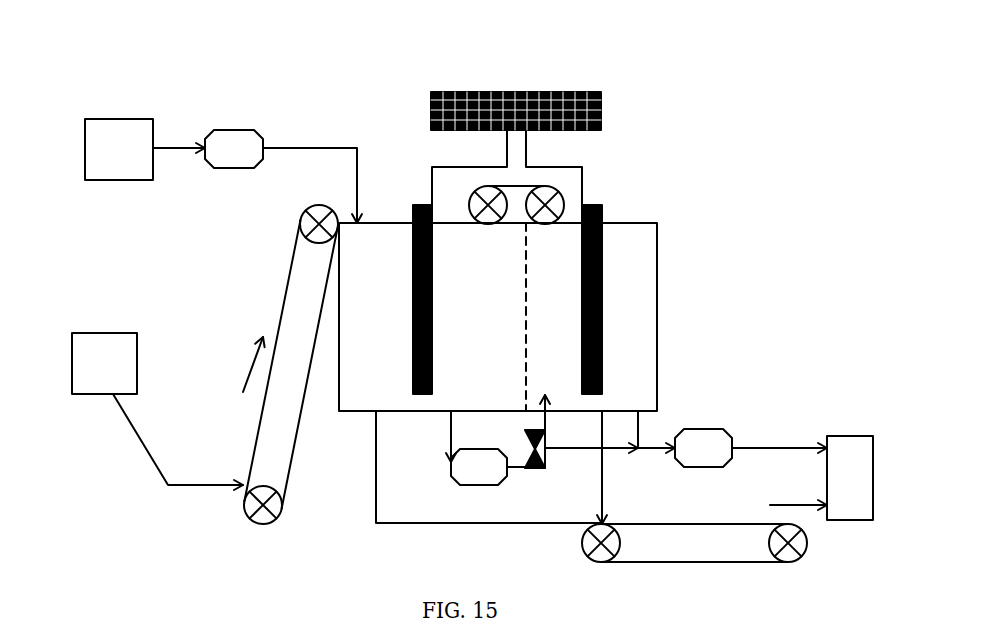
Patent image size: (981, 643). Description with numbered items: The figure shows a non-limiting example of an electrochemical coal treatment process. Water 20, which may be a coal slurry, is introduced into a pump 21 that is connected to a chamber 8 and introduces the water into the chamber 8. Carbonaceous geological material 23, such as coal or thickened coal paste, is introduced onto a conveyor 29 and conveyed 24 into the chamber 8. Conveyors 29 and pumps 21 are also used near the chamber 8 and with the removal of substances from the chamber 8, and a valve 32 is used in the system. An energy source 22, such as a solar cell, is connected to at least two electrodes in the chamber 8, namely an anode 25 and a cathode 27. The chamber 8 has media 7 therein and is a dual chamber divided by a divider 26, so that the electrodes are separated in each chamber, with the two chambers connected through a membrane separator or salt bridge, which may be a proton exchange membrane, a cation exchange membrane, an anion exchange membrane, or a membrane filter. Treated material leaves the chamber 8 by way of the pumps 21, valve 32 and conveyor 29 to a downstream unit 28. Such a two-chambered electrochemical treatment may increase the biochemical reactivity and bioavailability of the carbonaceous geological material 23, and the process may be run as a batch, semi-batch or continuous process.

The media 7 is at (625, 282).
The chamber 8 is at (650, 223).
The water 20 is at (118, 133).
The pump 21 is at (237, 142).
The energy source 22 is at (480, 112).
The carbonaceous geological material 23 is at (103, 350).
The conveying 24 is at (252, 368).
The anode 25 is at (414, 262).
The divider 26 is at (524, 325).
The cathode 27 is at (588, 328).
The collection unit 28 is at (843, 460).
The conveyor 29 is at (553, 204).
The valve 32 is at (540, 467).